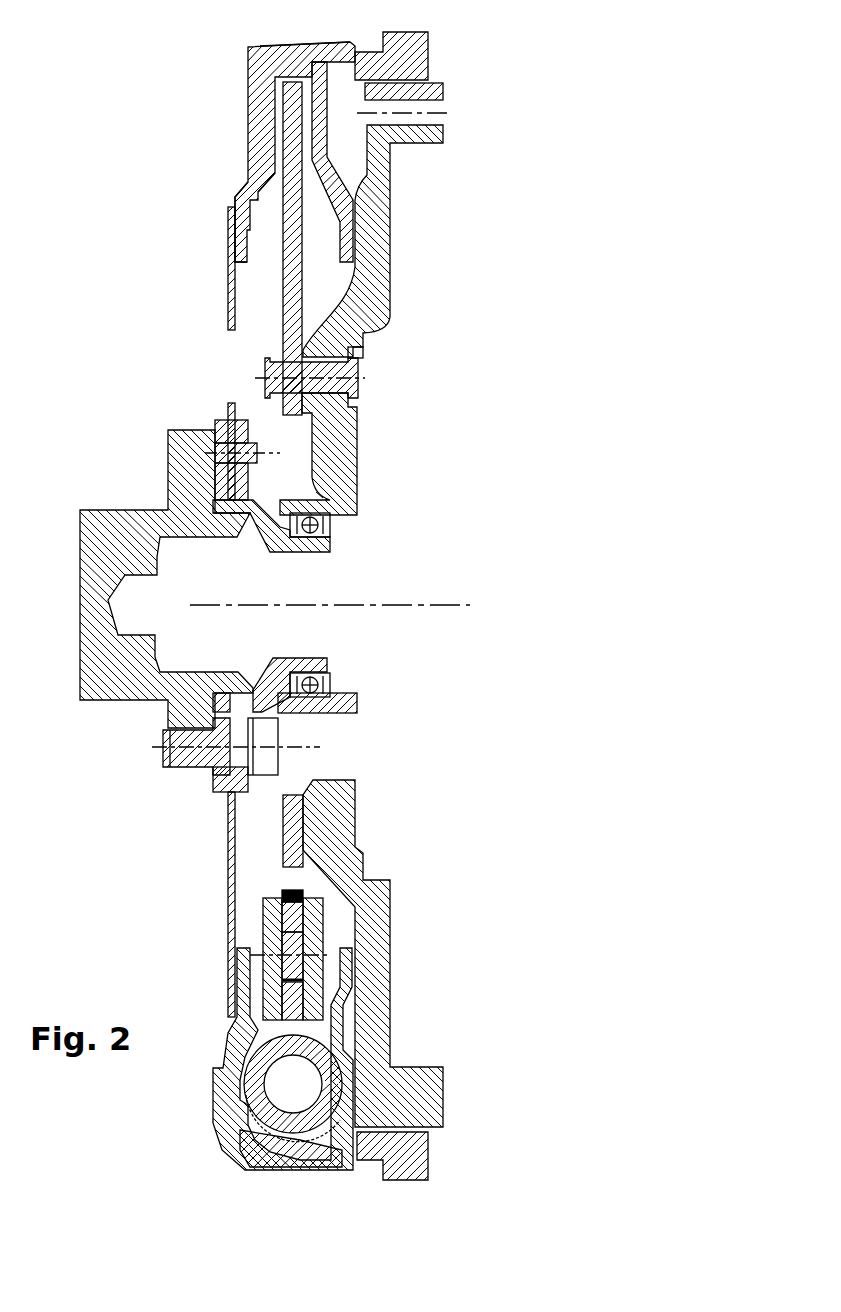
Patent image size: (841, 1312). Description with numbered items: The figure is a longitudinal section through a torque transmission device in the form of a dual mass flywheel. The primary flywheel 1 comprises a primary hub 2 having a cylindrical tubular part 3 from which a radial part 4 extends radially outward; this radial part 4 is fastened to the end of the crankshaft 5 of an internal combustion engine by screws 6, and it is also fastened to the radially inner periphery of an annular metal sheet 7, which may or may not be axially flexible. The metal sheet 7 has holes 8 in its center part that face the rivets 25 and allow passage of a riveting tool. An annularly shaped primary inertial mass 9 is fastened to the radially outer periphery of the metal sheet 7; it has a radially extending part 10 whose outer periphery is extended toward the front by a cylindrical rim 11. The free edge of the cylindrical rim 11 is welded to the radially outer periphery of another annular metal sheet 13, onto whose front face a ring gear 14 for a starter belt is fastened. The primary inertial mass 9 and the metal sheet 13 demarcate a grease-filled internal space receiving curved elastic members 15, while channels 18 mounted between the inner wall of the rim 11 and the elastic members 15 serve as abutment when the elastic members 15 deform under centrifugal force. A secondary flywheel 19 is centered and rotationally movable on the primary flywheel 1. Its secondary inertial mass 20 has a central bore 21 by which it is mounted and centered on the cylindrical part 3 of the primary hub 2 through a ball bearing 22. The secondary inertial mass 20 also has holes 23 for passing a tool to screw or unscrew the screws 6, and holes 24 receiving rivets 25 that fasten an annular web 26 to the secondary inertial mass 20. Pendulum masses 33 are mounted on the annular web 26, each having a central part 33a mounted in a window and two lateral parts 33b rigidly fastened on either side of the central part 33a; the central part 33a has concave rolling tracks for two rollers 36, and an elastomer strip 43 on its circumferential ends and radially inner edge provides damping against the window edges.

The primary flywheel 1 is at (202, 116).
The primary hub 2 is at (268, 660).
The cylindrical tubular part 3 is at (282, 555).
The radial part 4 is at (228, 412).
The crankshaft 5 is at (112, 518).
The screws 6 is at (178, 754).
The annular metal sheet 7 is at (230, 305).
The holes 8 is at (220, 358).
The primary inertial mass 9 is at (238, 95).
The radial part 10 is at (257, 164).
The cylindrical rim 11 is at (297, 52).
The annular metal sheet 13 is at (335, 168).
The ring gear 14 is at (420, 56).
The curved elastic members 15 is at (258, 1098).
The channels 18 is at (250, 1150).
The secondary flywheel 19 is at (440, 217).
The secondary inertial mass 20 is at (340, 827).
The bore 21 is at (342, 517).
The ball bearing 22 is at (340, 680).
The holes 23 is at (324, 742).
The holes 24 is at (353, 350).
The rivets 25 is at (352, 389).
The annular web 26 is at (300, 306).
The pendulum masses 33 is at (250, 938).
The central part 33a is at (300, 915).
The lateral parts 33b is at (305, 940).
The rollers 36 is at (295, 978).
The elastomer strip 43 is at (288, 895).